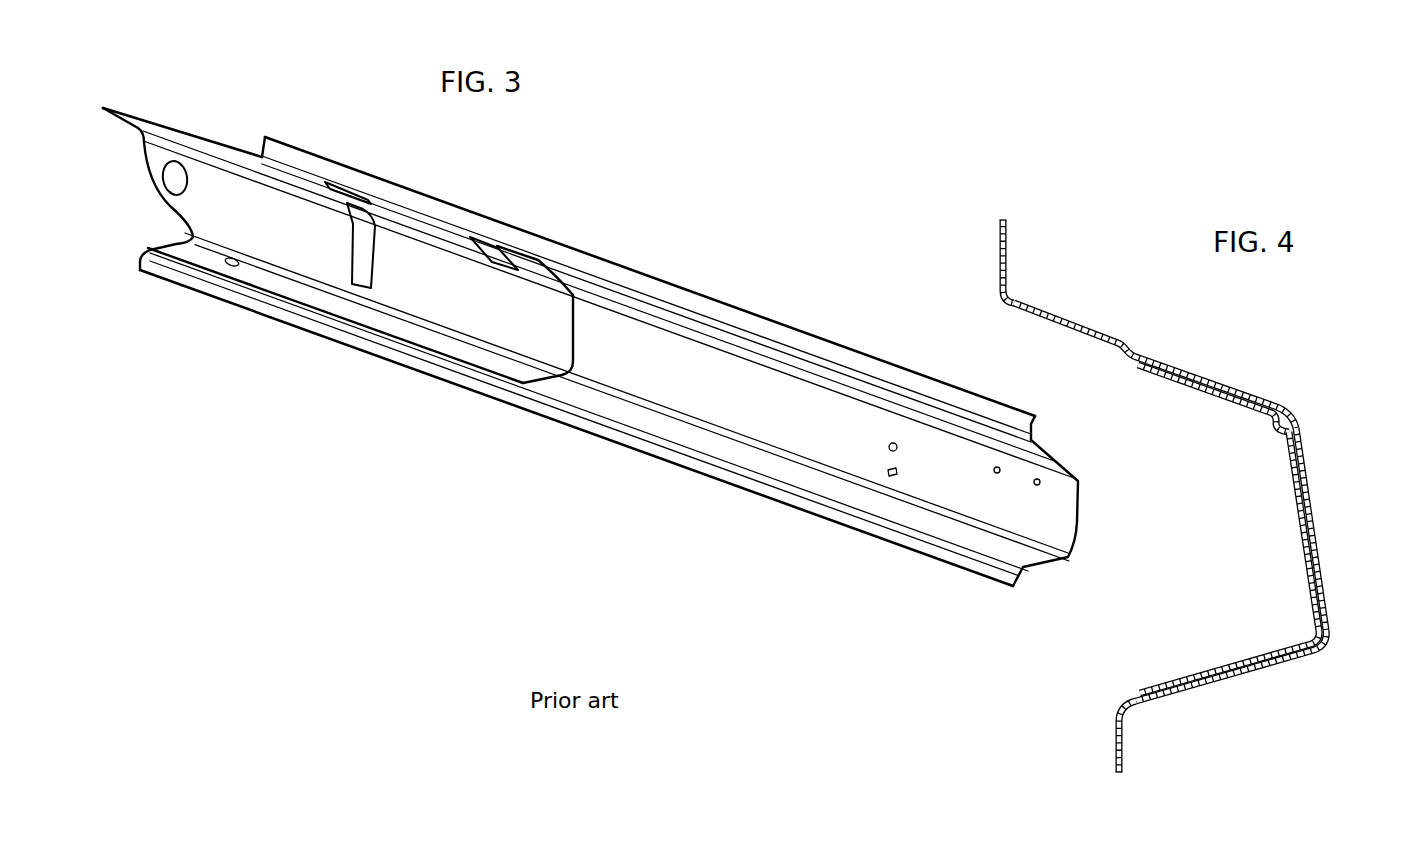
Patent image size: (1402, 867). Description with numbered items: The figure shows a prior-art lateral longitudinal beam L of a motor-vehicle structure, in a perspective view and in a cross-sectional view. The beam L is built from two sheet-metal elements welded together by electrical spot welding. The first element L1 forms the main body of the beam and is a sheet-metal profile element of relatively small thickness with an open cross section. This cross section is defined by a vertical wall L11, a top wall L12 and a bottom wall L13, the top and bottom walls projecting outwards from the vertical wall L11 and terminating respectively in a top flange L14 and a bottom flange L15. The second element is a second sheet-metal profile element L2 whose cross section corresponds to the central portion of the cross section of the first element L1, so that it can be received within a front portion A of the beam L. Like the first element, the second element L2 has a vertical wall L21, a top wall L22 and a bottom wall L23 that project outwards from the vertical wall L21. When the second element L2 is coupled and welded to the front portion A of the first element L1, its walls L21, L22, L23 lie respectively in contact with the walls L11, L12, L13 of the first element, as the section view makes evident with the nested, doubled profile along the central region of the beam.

In FIG. 3, the lateral longitudinal beam L is at (618, 474).
In FIG. 4, the lateral longitudinal beam L is at (1210, 722).
In FIG. 3, the first element L1 is at (777, 316).
In FIG. 4, the first element L1 is at (1013, 248).
In FIG. 3, the vertical wall L11 is at (802, 390).
In FIG. 4, the vertical wall L11 is at (1318, 544).
In FIG. 3, the top wall L12 is at (895, 390).
In FIG. 4, the top wall L12 is at (1087, 316).
In FIG. 3, the bottom wall L13 is at (943, 528).
In FIG. 4, the bottom wall L13 is at (1277, 672).
In FIG. 3, the top flange L14 is at (594, 257).
In FIG. 4, the top flange L14 is at (1001, 262).
In FIG. 3, the bottom flange L15 is at (762, 480).
In FIG. 4, the bottom flange L15 is at (1113, 757).
In FIG. 3, the second sheet-metal profile element L2 is at (148, 174).
In FIG. 4, the second sheet-metal profile element L2 is at (1204, 673).
In FIG. 3, the vertical wall L21 is at (562, 327).
In FIG. 4, the vertical wall L21 is at (1293, 490).
In FIG. 3, the top wall L22 is at (186, 142).
In FIG. 4, the top wall L22 is at (1190, 387).
In FIG. 3, the bottom wall L23 is at (522, 368).
In FIG. 4, the bottom wall L23 is at (1252, 660).
In FIG. 3, the front portion A is at (470, 400).